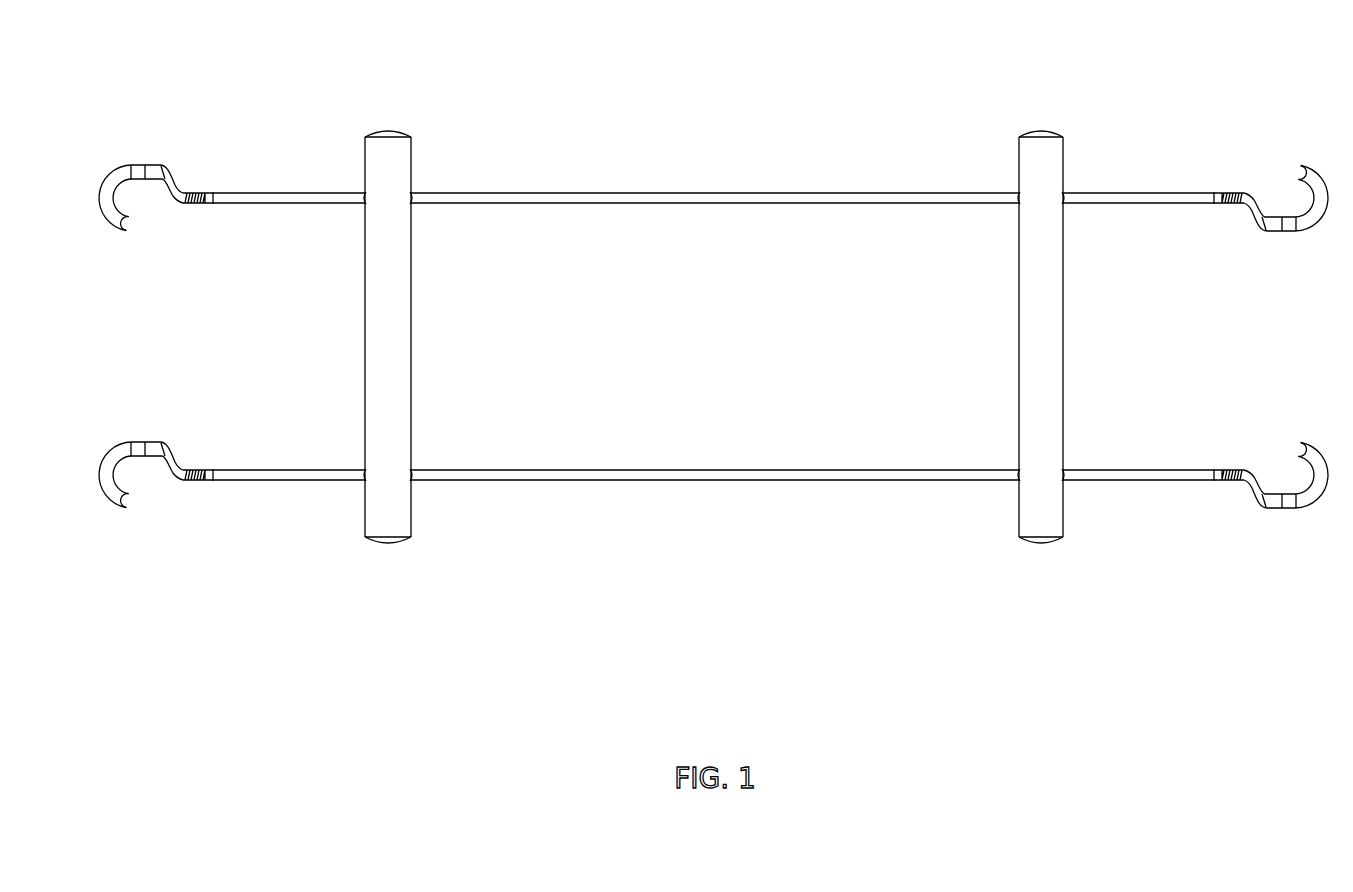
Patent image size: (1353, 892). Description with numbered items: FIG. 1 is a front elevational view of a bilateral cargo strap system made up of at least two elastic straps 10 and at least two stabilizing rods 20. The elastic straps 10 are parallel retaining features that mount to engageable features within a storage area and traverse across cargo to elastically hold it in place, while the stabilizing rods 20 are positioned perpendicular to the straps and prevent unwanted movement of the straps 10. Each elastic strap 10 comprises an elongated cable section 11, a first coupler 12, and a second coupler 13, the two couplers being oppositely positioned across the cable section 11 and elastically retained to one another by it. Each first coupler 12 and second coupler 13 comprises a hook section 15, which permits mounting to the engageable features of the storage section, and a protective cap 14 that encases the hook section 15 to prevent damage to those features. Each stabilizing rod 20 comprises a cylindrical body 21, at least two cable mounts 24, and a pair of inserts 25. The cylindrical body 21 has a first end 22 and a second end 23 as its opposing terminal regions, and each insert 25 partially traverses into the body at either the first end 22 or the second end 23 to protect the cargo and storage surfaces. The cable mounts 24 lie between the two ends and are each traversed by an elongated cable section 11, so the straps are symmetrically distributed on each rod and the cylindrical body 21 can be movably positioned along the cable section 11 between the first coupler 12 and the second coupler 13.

The elastic strap 10 is at (745, 162).
The elongated cable section 11 is at (663, 193).
The first coupler 12 is at (124, 150).
The second coupler 13 is at (1296, 243).
The protective cap 14 is at (125, 230).
The hook section 15 is at (152, 210).
The stabilizing rod 20 is at (418, 380).
The cylindrical body 21 is at (377, 349).
The first end 22 is at (435, 130).
The second end 23 is at (423, 520).
The cable mount 24 is at (413, 193).
The insert 25 is at (372, 131).